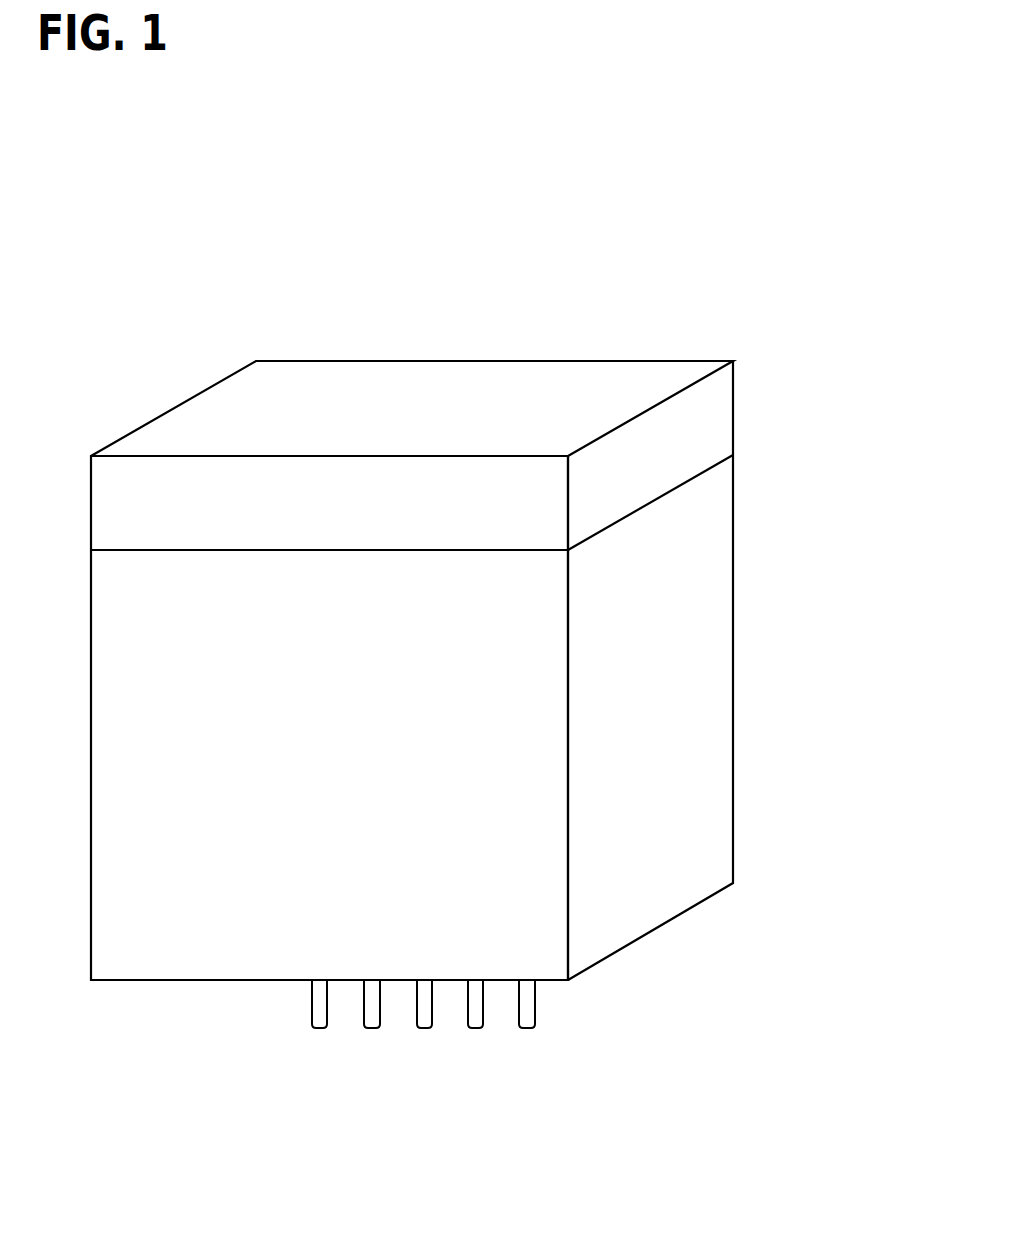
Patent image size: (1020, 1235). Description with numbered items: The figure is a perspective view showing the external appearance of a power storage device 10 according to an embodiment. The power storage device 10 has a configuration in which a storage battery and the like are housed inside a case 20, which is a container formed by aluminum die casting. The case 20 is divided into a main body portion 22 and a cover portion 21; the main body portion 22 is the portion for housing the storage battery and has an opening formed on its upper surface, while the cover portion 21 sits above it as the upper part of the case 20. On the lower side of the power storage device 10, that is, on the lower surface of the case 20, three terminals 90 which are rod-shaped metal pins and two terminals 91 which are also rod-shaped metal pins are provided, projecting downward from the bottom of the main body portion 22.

The power storage device 10 is at (718, 316).
The case 20 is at (861, 410).
The cover portion 21 is at (705, 425).
The main body portion 22 is at (710, 622).
The terminals 90 is at (320, 1020).
The terminals 91 is at (475, 1020).